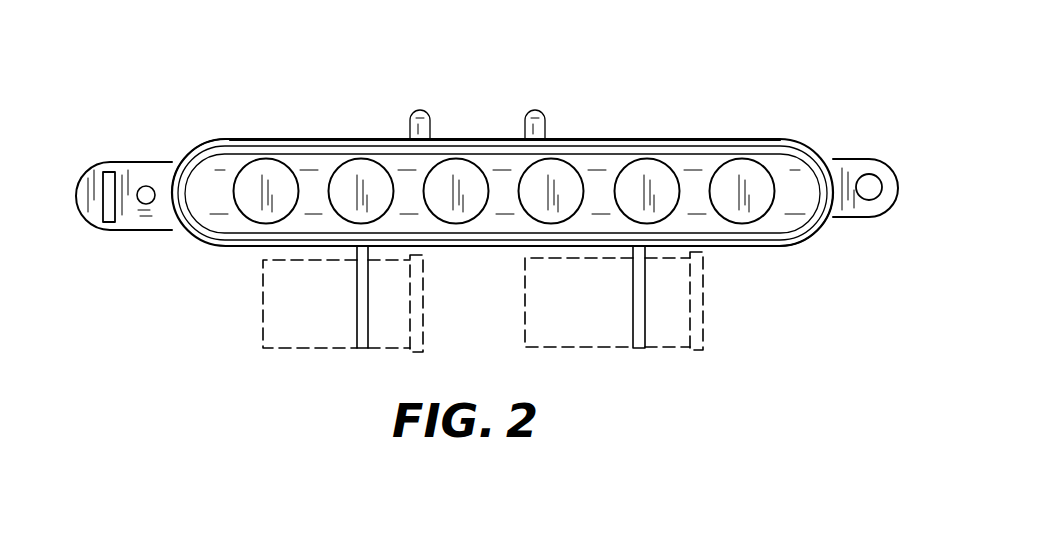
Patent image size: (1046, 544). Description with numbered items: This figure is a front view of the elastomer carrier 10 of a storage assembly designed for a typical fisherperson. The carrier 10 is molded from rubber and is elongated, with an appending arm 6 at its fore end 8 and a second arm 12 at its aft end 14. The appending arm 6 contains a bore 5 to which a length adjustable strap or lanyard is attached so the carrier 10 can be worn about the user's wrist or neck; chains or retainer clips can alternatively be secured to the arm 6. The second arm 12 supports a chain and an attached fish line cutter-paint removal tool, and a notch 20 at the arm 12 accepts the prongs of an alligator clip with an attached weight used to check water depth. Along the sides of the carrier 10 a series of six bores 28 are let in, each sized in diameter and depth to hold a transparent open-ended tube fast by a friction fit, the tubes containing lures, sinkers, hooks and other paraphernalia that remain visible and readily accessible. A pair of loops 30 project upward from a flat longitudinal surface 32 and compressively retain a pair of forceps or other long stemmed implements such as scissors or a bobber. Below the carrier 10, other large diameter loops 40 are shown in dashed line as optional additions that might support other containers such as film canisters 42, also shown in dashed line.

The bore 5 is at (876, 176).
The appending arm 6 is at (870, 220).
The fore end 8 is at (815, 238).
The elastomer carrier 10 is at (800, 130).
The second arm 12 is at (88, 170).
The aft end 14 is at (198, 143).
The notch 20 is at (113, 218).
The bores 28 is at (285, 190).
The loops 30 is at (423, 110).
The flat longitudinal surface 32 is at (632, 139).
The large diameter loops 40 is at (360, 352).
The film canisters 42 is at (263, 323).